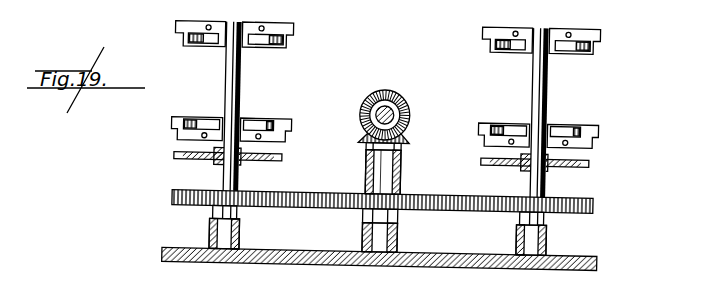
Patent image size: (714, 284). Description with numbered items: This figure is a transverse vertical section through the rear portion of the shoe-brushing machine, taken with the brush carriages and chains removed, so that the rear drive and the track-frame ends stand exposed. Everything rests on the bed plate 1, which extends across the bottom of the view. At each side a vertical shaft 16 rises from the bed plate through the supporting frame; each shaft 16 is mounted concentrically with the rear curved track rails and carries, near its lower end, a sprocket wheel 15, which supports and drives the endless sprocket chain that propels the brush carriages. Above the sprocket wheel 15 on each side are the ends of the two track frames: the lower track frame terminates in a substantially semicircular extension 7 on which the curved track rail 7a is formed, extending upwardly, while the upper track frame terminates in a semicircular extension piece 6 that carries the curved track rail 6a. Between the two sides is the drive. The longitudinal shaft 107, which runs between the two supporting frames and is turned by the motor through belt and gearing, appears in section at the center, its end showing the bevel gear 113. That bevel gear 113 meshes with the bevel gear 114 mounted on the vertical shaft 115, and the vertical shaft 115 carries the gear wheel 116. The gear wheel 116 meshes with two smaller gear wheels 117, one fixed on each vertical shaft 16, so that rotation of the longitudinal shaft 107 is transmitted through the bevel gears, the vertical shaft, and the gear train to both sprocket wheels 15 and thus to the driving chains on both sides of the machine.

The bed plate 1 is at (161, 253).
The semicircular extension piece 6 is at (273, 23).
The curved track rail 6a is at (408, 11).
The semicircular extension 7 is at (389, 122).
The curved track rail 7a is at (270, 119).
The sprocket wheel 15 is at (184, 162).
The vertical shaft 16 is at (223, 77).
The longitudinal shaft 107 is at (403, 103).
The bevel gear 113 is at (376, 90).
The bevel gear 114 is at (405, 136).
The vertical shaft 115 is at (400, 171).
The gear wheel 116 is at (340, 210).
The gear wheel 117 is at (172, 193).